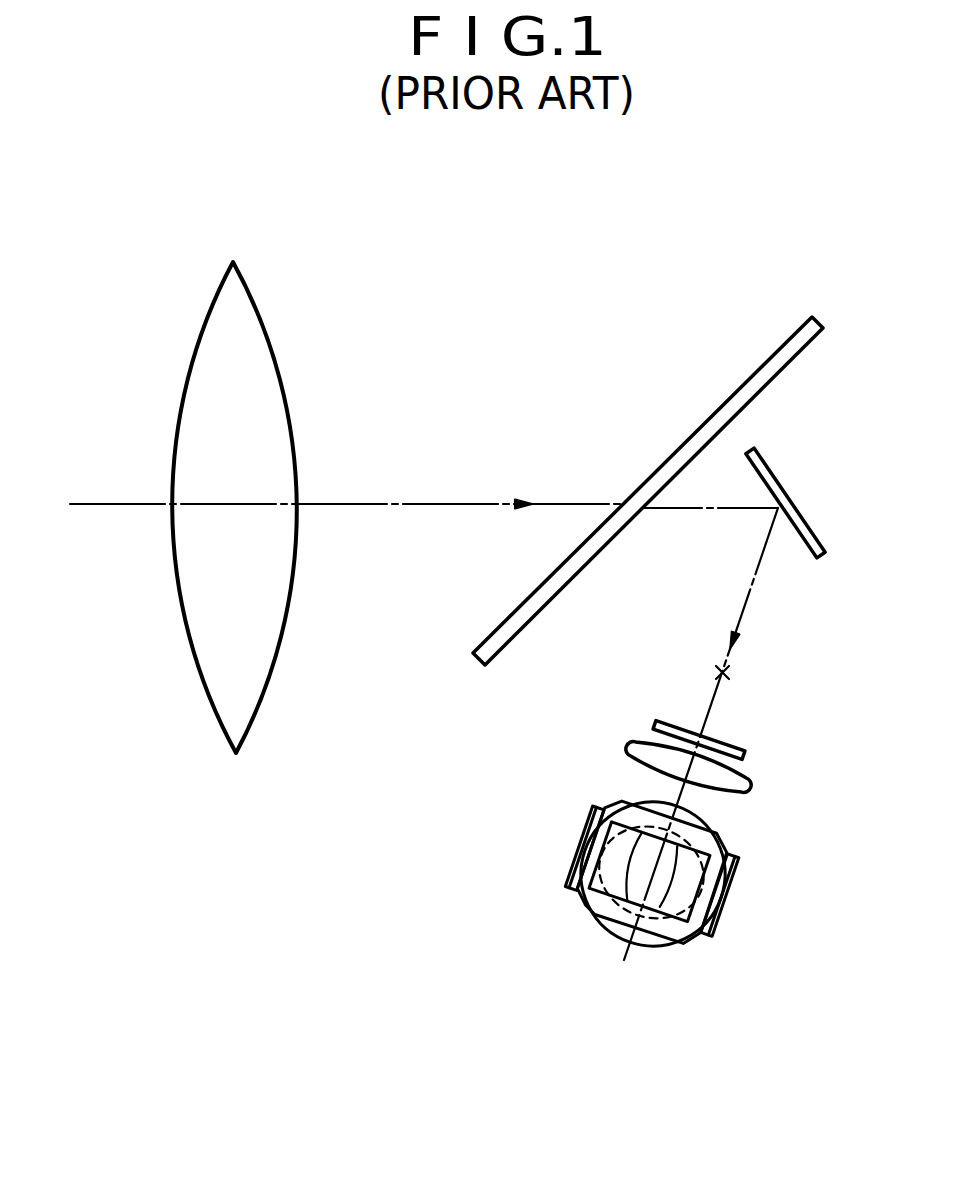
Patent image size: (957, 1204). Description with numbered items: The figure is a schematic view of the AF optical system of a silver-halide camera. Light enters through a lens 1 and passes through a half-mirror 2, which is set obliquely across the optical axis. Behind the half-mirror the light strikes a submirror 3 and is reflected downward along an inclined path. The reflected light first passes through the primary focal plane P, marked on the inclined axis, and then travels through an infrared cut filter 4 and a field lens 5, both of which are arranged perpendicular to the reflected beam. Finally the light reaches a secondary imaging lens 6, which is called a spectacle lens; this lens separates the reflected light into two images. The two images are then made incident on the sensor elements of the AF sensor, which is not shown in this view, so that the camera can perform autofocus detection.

The lens 1 is at (256, 306).
The half-mirror 2 is at (750, 378).
The submirror 3 is at (798, 512).
The infrared cut filter 4 is at (675, 727).
The field lens 5 is at (628, 747).
The secondary imaging lens 6 is at (652, 905).
The primary focal plane P is at (735, 676).